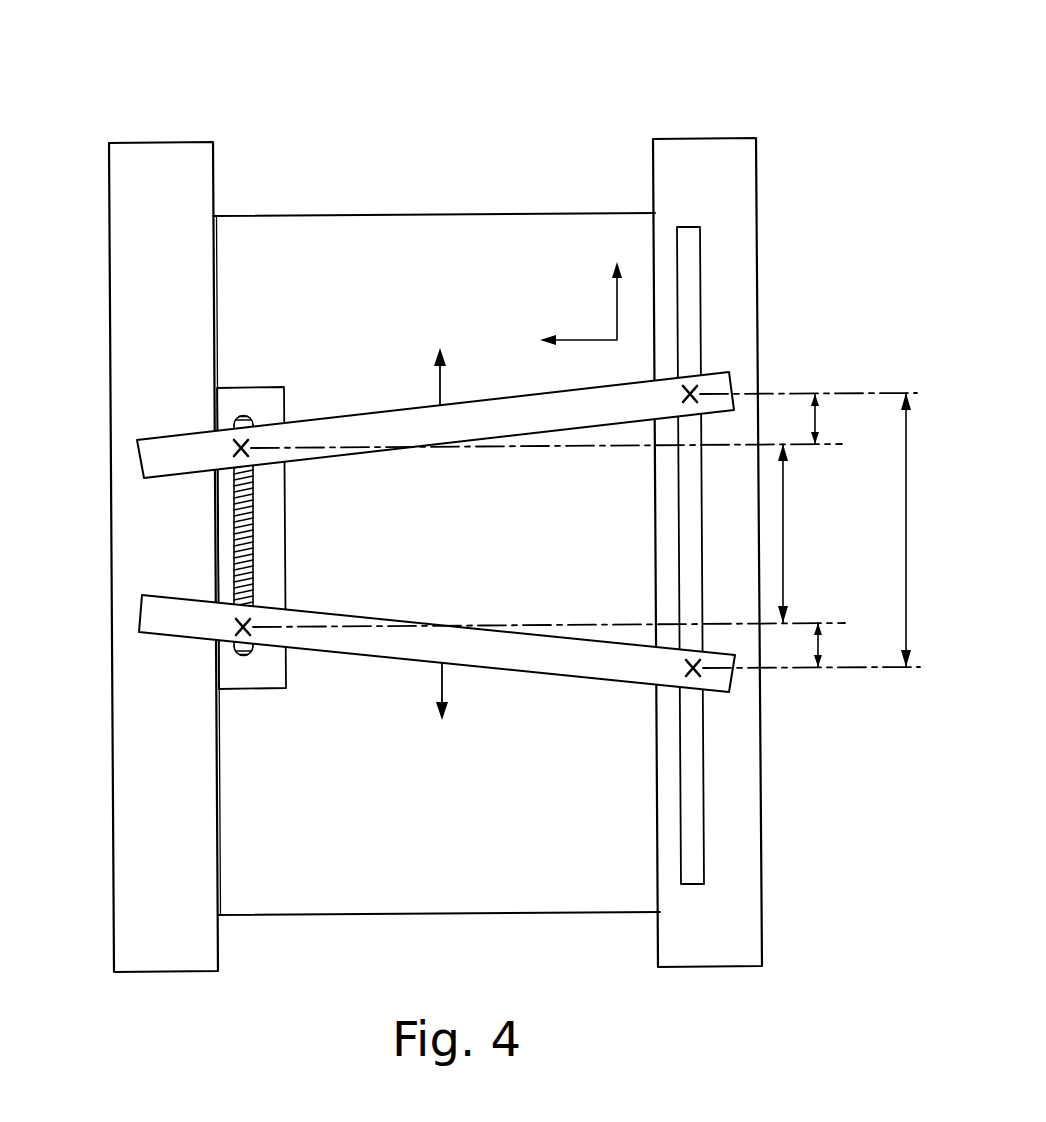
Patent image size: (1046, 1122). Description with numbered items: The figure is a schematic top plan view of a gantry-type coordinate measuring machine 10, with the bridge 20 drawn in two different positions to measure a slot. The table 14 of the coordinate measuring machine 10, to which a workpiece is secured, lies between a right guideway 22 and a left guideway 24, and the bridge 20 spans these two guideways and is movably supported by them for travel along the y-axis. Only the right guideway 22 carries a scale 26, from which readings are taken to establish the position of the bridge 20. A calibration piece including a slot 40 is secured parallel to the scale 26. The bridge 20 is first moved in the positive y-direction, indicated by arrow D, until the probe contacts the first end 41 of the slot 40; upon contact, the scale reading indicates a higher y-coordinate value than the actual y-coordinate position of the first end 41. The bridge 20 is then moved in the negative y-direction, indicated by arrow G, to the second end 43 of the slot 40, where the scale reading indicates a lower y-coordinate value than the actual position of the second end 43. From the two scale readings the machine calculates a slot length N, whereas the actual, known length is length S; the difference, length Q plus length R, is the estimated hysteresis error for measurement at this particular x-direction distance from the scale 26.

The coordinate measuring machine 10 is at (604, 92).
The table 14 is at (463, 265).
The bridge 20 is at (150, 613).
The right guideway 22 is at (705, 148).
The left guideway 24 is at (145, 155).
The scale 26 is at (690, 240).
The slot 40 is at (250, 533).
The first end of slot 41 is at (243, 418).
The second end of slot 43 is at (245, 656).